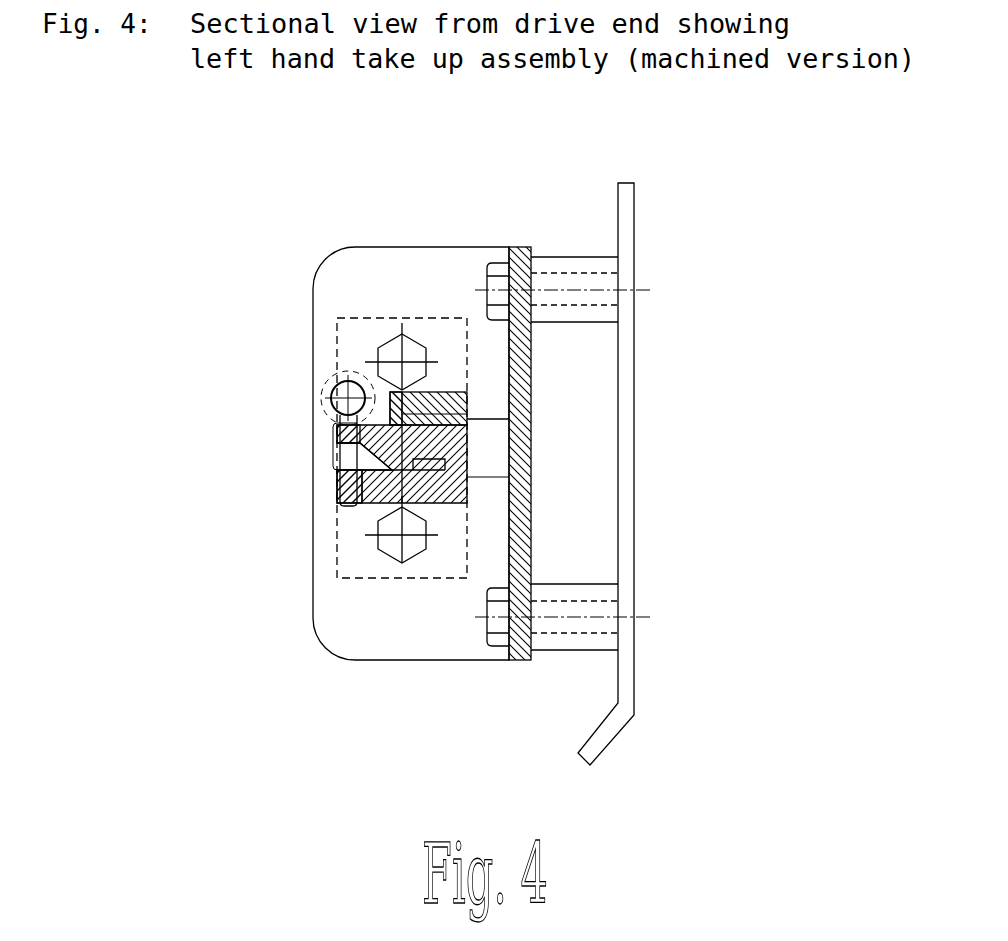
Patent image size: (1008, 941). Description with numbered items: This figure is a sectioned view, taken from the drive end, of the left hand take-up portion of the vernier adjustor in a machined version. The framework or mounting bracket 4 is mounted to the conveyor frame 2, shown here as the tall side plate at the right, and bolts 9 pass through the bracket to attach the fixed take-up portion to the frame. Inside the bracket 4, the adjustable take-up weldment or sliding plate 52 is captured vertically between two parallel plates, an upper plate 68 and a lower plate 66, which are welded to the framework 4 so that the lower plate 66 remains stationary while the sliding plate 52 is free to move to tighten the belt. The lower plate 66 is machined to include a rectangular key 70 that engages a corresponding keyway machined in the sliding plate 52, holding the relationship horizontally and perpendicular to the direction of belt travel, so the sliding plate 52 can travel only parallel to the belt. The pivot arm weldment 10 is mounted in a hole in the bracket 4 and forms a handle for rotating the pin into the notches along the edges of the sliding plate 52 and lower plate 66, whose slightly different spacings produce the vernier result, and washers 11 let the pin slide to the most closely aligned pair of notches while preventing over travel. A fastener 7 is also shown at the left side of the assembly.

The conveyor frame weldment 2 is at (635, 205).
The mounting bracket 4 is at (302, 262).
The adjusting bolt 7 is at (313, 458).
The bolts for attaching the fixed take-up weldment 9 is at (485, 265).
The pivot arm weldment 10 is at (342, 373).
The washers 11 is at (467, 419).
The adjustable take-up weldment 52 is at (402, 403).
The lower plate 66 is at (372, 487).
The upper plate 68 is at (465, 408).
The rectangular key 70 is at (433, 467).